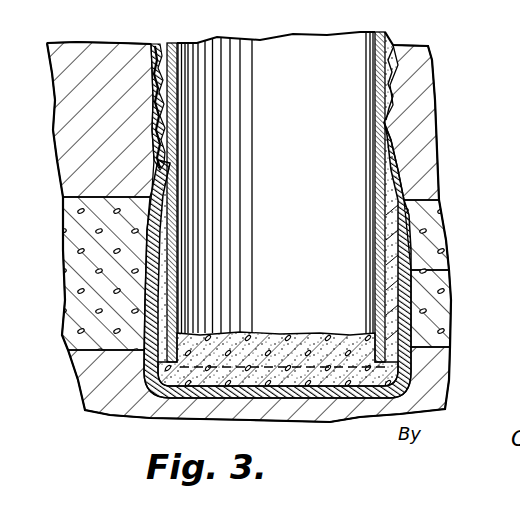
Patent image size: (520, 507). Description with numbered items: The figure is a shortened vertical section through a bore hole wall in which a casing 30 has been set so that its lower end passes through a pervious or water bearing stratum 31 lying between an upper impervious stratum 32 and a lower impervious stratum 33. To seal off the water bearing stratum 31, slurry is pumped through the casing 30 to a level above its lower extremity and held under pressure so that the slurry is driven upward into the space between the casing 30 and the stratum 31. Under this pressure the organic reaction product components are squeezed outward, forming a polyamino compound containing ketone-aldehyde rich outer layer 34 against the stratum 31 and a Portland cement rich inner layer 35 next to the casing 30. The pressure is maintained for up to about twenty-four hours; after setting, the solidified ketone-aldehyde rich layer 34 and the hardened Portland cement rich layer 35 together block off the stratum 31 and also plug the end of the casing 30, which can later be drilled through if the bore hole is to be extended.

The casing 30 is at (379, 33).
The pervious or water bearing stratum 31 is at (424, 239).
The impervious stratum 32 is at (421, 90).
The impervious stratum 33 is at (440, 392).
The ketone-aldehyde rich outer layer 34 is at (442, 270).
The Portland cement rich inner layer 35 is at (410, 320).